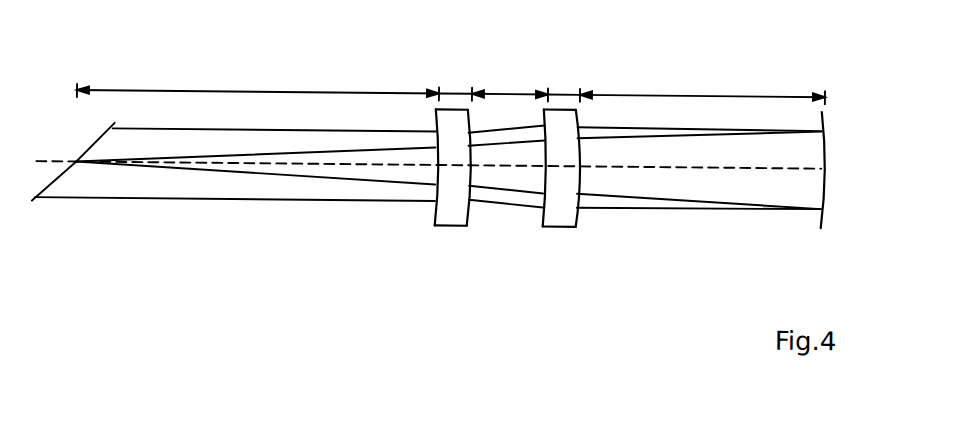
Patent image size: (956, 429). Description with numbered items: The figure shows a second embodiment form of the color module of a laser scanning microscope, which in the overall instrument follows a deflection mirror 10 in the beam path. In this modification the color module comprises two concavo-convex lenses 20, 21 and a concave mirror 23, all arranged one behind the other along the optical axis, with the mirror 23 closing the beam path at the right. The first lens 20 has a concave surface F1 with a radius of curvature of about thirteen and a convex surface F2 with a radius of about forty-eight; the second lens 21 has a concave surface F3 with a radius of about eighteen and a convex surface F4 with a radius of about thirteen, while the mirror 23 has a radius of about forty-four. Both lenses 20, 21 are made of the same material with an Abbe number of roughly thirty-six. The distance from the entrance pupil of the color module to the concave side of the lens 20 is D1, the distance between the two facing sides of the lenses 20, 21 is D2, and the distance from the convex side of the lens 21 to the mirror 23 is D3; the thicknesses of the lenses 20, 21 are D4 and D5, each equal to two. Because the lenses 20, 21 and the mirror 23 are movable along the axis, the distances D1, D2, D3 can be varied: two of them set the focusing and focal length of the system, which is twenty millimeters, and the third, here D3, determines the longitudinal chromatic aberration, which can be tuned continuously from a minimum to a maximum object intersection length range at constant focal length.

The deflection mirror 10 is at (33, 202).
The concavo-convex lens 20 is at (441, 226).
The concavo-convex lens 21 is at (573, 226).
The concave mirror 23 is at (822, 216).
The concave surface F1 is at (433, 219).
The convex surface F2 is at (467, 219).
The concave surface F3 is at (543, 218).
The convex surface F4 is at (575, 218).
The distance from entrance pupil to concave side of lens D1 is at (333, 86).
The distance between facing sides of the lenses D2 is at (518, 88).
The distance from convex side of lens to mirror D3 is at (678, 89).
The thickness of lens D4 is at (457, 86).
The thickness of lens D5 is at (568, 87).